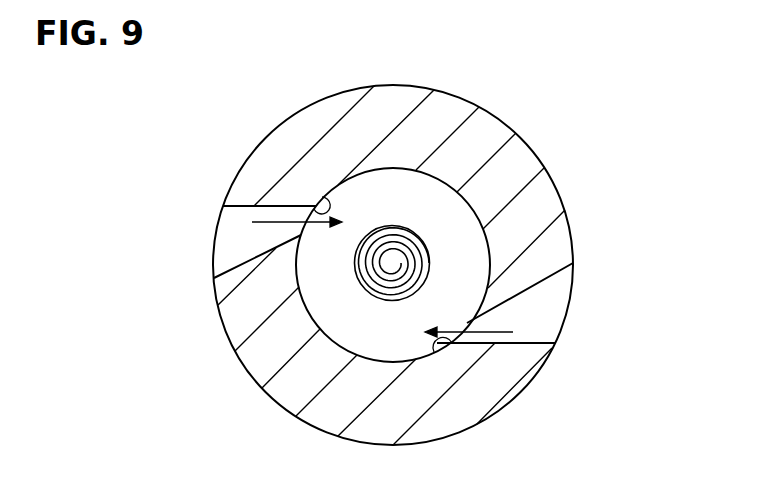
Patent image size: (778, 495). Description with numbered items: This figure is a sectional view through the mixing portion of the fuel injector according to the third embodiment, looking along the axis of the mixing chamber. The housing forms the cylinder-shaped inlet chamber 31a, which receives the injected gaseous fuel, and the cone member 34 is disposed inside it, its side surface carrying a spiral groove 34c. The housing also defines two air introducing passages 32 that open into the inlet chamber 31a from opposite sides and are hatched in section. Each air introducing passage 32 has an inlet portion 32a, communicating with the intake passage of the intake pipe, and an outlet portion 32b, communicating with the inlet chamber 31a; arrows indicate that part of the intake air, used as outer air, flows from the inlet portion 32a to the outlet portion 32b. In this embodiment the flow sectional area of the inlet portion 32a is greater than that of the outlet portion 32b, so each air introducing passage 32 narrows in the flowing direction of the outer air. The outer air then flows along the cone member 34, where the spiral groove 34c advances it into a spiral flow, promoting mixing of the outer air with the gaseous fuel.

The inlet chamber 31a is at (322, 258).
The air introducing passage 32 is at (240, 252).
The inlet portion 32a is at (213, 241).
The outlet portion 32b is at (322, 197).
The cone member 34 is at (394, 262).
The spiral groove 34c is at (420, 253).